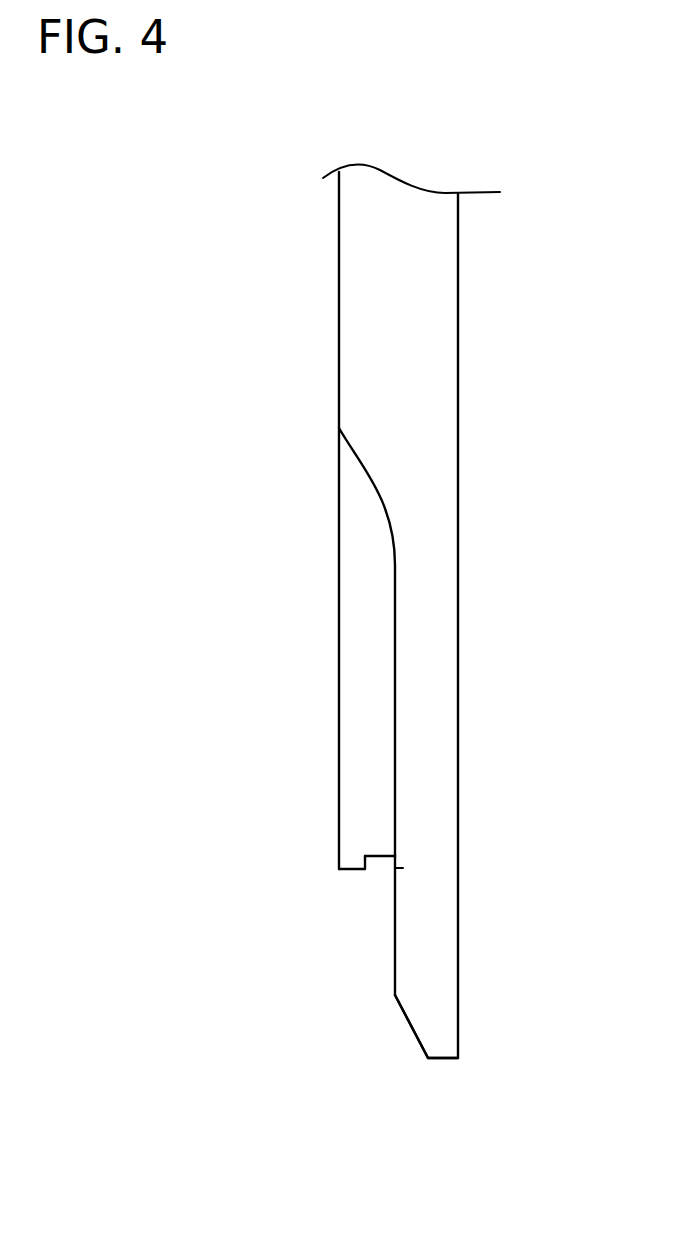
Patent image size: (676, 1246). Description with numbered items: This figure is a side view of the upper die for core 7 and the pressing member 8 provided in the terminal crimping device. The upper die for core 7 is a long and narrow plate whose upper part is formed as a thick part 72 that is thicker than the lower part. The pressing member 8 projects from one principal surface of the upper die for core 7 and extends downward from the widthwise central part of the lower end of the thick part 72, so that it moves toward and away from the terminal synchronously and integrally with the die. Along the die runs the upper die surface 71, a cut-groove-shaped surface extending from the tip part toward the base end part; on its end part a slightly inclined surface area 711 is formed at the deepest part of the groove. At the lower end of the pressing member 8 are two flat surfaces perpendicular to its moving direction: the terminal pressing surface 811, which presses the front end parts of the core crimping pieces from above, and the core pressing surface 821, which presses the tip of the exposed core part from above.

The upper die for core 7 is at (458, 718).
The upper die surface 71 is at (414, 873).
The inclined surface area 711 is at (422, 868).
The thick part 72 is at (339, 300).
The pressing member 8 is at (339, 712).
The terminal pressing surface 811 is at (385, 869).
The core pressing surface 821 is at (356, 881).